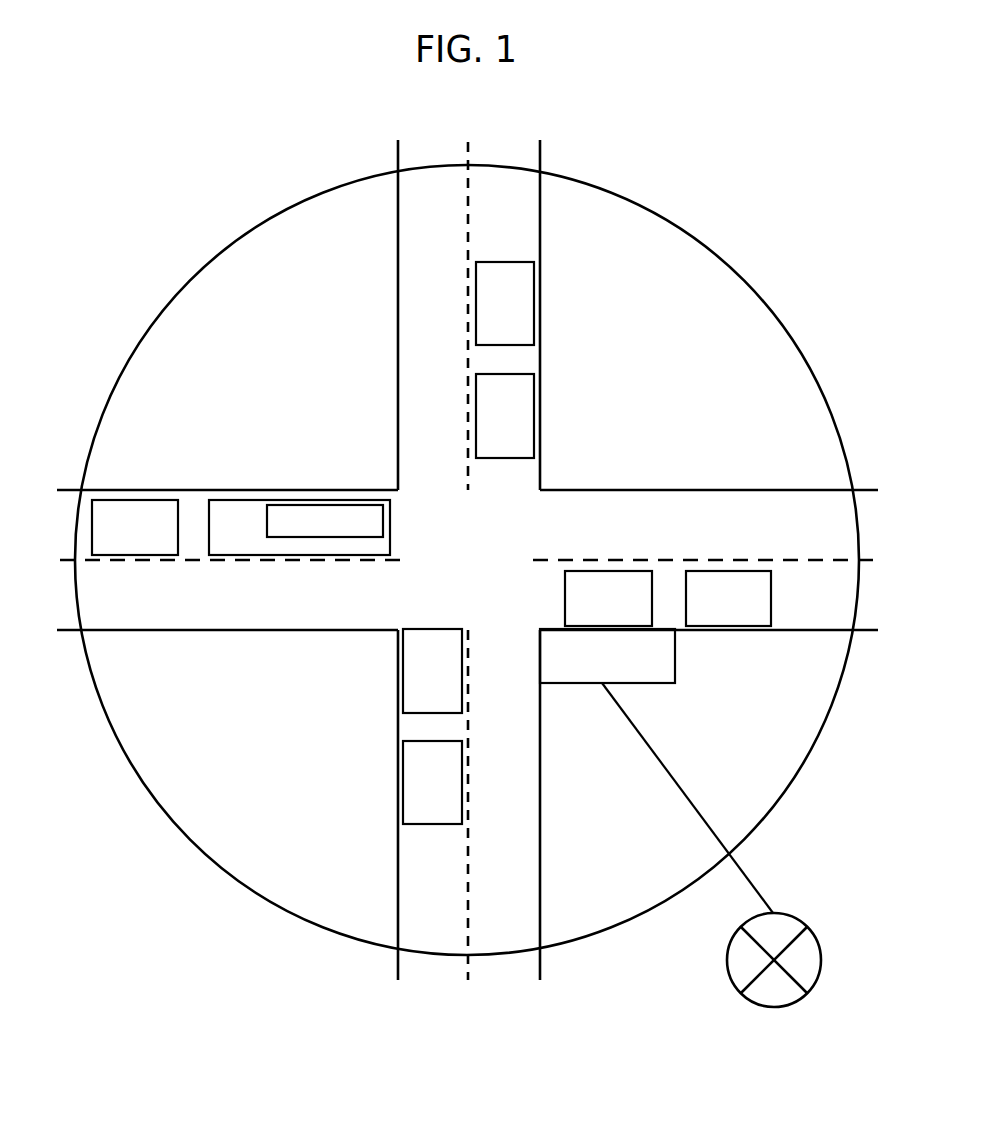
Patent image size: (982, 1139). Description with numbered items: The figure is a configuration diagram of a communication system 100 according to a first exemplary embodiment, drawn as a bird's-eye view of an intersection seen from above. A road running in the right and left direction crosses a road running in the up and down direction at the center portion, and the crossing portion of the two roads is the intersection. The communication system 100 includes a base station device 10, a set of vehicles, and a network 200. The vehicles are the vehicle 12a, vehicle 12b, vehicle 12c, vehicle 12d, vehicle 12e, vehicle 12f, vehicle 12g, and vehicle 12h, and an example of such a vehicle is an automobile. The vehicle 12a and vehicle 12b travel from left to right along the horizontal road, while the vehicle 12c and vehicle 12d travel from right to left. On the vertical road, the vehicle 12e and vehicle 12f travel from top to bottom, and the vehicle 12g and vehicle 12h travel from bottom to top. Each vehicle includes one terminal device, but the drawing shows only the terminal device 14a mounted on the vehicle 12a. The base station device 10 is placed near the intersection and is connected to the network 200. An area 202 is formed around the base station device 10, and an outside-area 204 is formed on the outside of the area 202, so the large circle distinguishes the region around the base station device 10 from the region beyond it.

The base station device 10 is at (583, 683).
The vehicle 12a is at (299, 526).
The vehicle 12b is at (180, 520).
The vehicle 12c is at (652, 588).
The vehicle 12d is at (771, 588).
The vehicle 12e is at (517, 374).
The vehicle 12f is at (517, 262).
The vehicle 12g is at (420, 713).
The vehicle 12h is at (420, 824).
The terminal device 14a is at (338, 537).
The communication system 100 is at (497, 1071).
The network 200 is at (797, 918).
The area 202 is at (800, 765).
The outside-area 204 is at (602, 958).